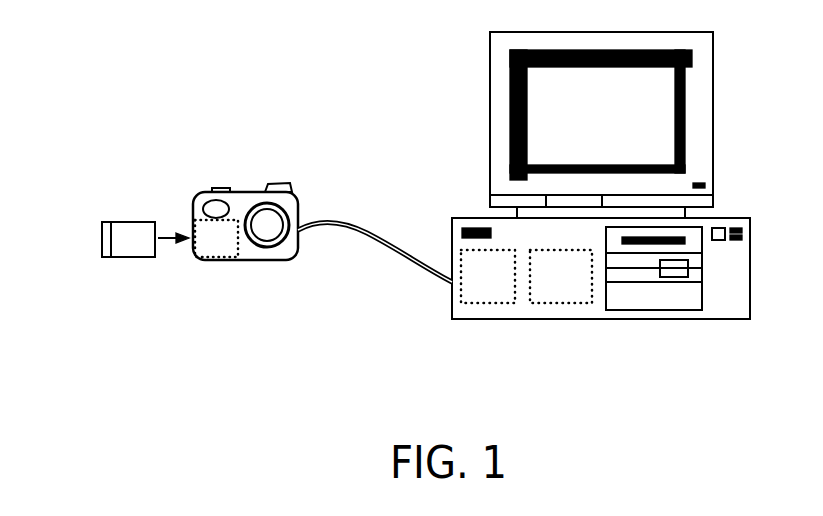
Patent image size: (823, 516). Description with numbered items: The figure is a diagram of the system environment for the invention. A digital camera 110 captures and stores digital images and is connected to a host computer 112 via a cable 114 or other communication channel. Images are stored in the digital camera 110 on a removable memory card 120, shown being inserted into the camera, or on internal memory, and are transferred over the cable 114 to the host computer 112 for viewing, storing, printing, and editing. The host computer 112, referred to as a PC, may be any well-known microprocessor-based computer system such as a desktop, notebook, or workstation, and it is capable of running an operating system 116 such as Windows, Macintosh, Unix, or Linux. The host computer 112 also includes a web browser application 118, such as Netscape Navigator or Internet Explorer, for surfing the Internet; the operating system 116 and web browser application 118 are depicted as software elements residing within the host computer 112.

The digital camera 110 is at (238, 260).
The host computer 112 is at (490, 105).
The cable 114 is at (320, 220).
The operating system 116 is at (453, 277).
The web browser application 118 is at (593, 285).
The removable memory card 120 is at (148, 227).